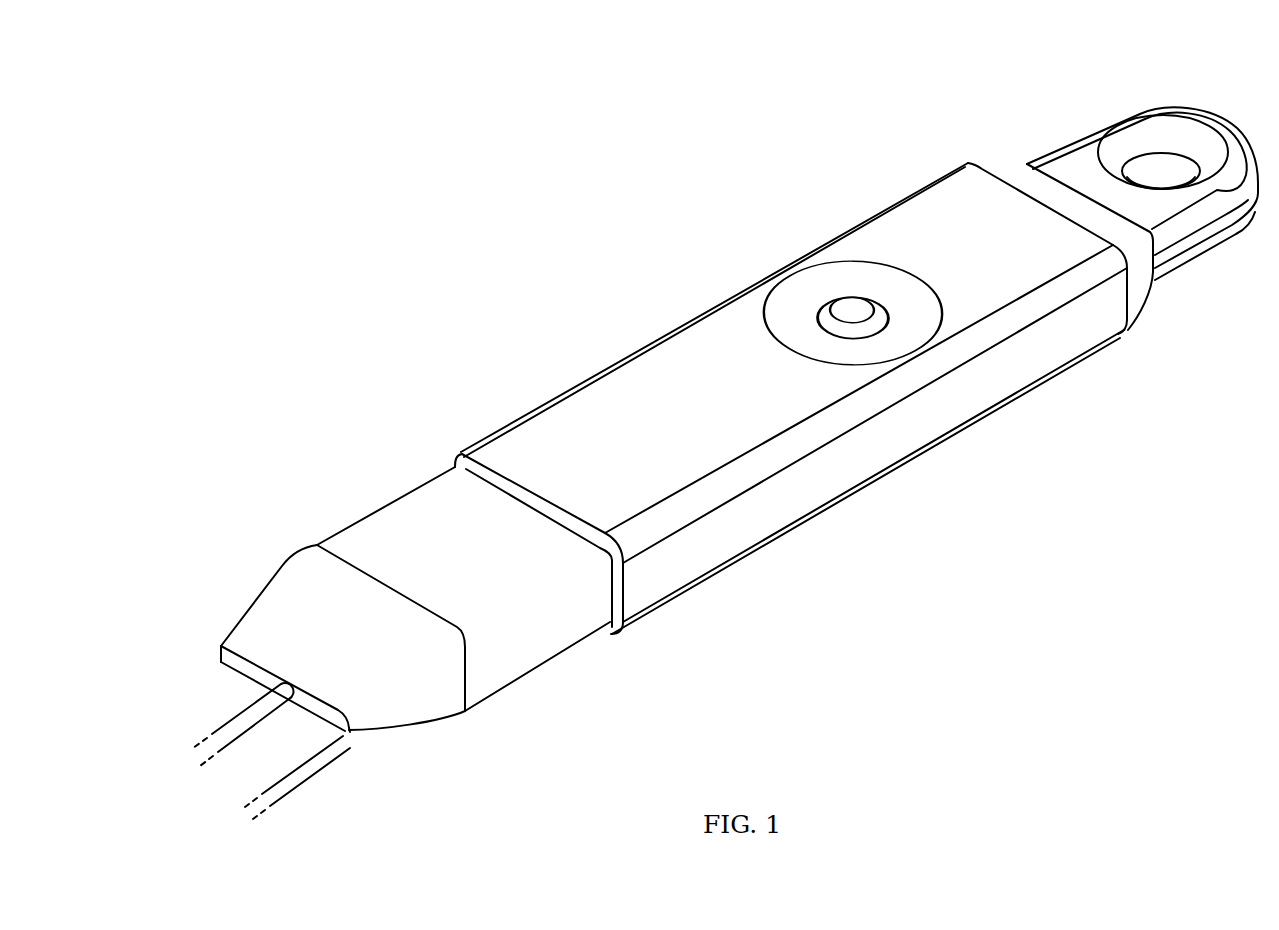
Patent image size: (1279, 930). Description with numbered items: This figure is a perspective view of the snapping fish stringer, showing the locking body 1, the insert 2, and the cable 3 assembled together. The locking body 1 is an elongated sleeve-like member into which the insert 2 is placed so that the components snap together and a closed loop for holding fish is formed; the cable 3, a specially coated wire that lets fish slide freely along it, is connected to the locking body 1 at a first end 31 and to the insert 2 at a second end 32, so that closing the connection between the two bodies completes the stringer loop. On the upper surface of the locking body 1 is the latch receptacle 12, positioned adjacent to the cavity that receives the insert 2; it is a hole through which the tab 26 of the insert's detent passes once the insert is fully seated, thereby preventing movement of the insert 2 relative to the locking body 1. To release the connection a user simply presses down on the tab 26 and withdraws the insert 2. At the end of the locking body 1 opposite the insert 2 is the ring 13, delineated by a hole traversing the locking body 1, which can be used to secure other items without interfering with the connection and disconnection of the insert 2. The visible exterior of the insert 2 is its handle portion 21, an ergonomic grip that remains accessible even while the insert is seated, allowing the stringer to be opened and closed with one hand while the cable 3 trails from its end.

The locking body 1 is at (739, 404).
The insert 2 is at (804, 460).
The latch receptacle 12 is at (853, 313).
The tab 26 is at (858, 316).
The ring 13 is at (1123, 140).
The handle portion 21 is at (383, 538).
The cable 3 is at (317, 719).
The first end 31 is at (344, 737).
The second end 32 is at (280, 690).